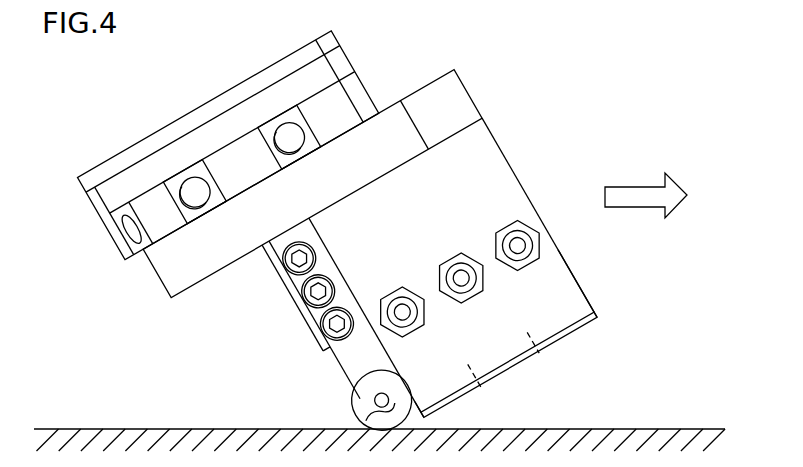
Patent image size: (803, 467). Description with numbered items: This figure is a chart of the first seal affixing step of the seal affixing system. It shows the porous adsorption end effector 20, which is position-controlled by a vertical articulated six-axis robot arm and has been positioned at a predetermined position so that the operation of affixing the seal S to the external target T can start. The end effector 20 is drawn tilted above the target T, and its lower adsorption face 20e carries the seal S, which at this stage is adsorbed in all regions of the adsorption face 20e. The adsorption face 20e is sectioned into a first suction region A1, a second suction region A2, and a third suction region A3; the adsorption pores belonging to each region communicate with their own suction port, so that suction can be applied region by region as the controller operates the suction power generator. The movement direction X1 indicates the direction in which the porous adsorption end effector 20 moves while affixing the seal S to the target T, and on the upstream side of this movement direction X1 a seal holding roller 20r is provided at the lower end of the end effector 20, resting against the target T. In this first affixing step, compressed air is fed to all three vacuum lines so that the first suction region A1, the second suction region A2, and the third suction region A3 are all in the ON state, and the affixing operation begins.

The porous adsorption end effector 20 is at (470, 161).
The adsorption face 20e is at (564, 317).
The seal holding roller 20r is at (353, 402).
The seal S is at (557, 337).
The target T is at (630, 428).
The movement direction X1 is at (671, 195).
The first suction region A1 is at (543, 327).
The second suction region A2 is at (488, 360).
The third suction region A3 is at (436, 387).